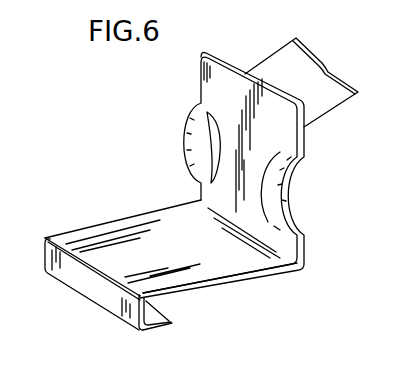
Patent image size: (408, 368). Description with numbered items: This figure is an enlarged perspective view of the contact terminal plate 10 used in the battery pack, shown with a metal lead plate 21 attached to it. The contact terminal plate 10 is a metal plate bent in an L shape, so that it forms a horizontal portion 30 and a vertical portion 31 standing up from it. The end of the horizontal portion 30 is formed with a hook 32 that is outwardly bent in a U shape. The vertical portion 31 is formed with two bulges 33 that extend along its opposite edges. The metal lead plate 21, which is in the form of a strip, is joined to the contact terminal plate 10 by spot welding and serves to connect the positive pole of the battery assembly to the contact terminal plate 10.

The bracket support member 10 is at (315, 143).
The mounting tab strip 21 is at (306, 57).
The base 30 is at (67, 237).
The upright plate 31 is at (202, 63).
The folded lip 32 is at (150, 330).
The curved flange 33 is at (188, 139).